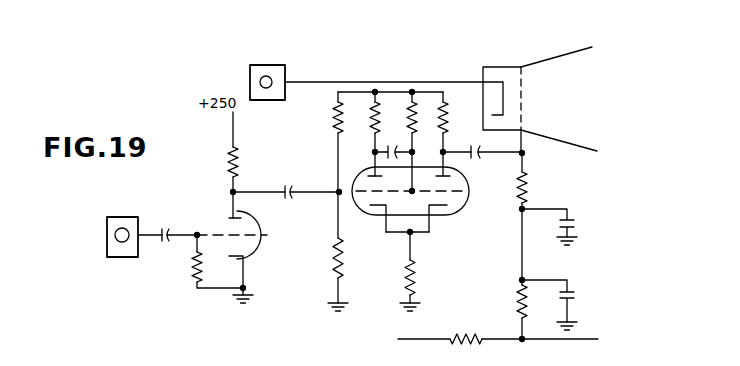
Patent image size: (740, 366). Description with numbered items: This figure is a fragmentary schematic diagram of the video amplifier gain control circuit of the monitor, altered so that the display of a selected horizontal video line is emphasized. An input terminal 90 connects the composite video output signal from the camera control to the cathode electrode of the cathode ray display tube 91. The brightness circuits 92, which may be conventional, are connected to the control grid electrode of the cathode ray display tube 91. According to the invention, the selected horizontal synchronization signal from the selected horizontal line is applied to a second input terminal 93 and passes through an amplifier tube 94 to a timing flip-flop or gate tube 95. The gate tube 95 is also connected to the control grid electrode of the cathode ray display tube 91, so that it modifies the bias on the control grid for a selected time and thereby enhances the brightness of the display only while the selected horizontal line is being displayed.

The input terminal 90 is at (278, 80).
The cathode ray display tube 91 is at (508, 77).
The brightness circuits 92 is at (525, 250).
The input terminal 93 is at (130, 230).
The amplifier tube 94 is at (248, 227).
The timing flip-flop or gate tube 95 is at (367, 215).